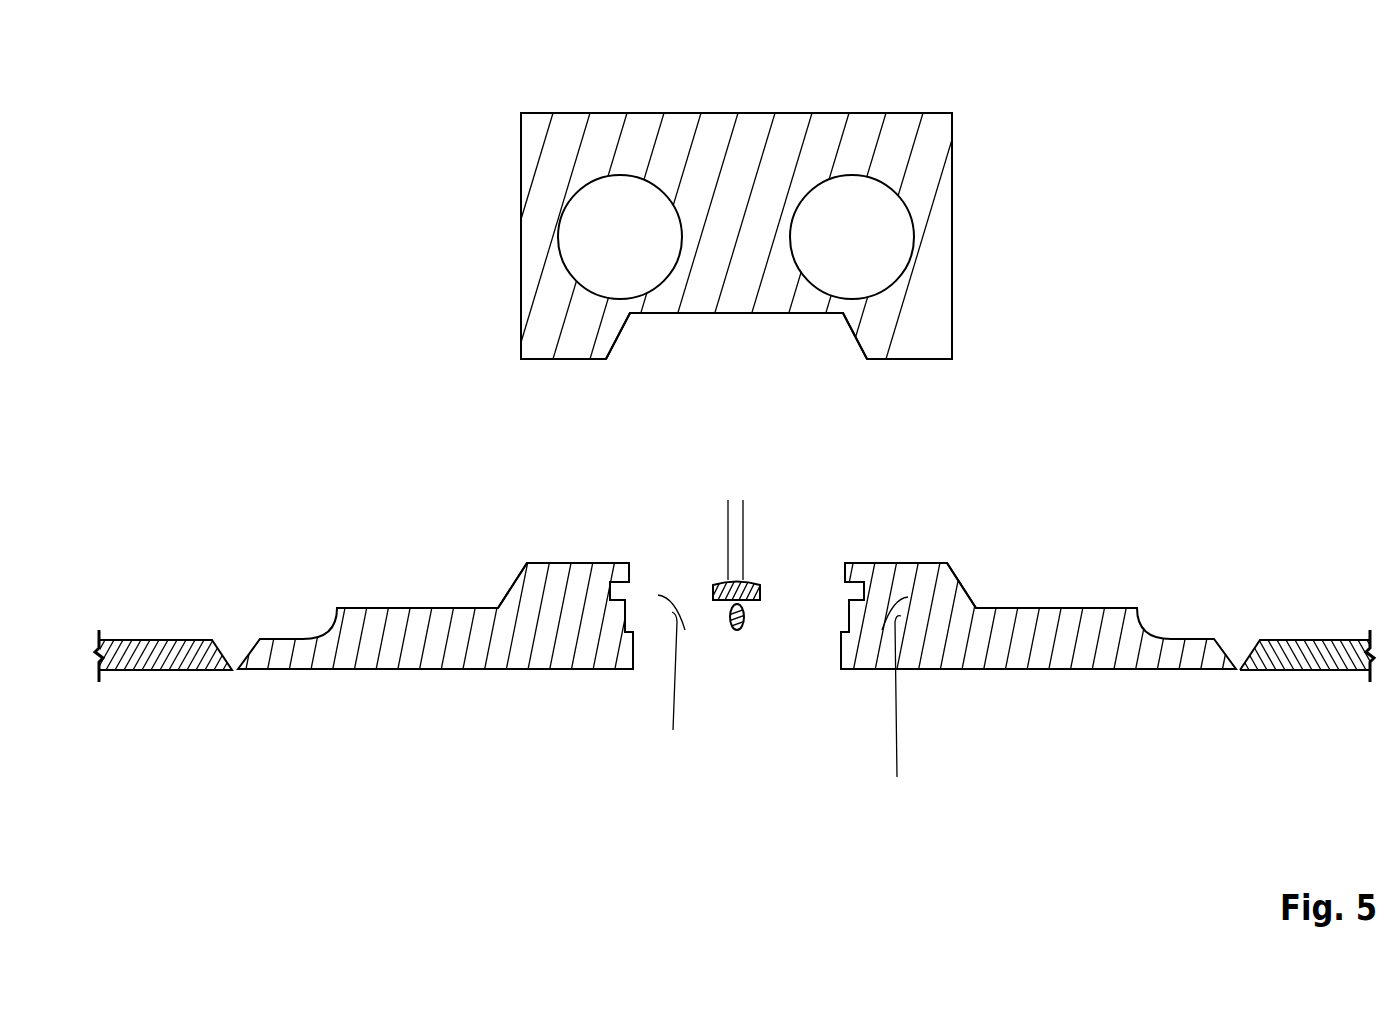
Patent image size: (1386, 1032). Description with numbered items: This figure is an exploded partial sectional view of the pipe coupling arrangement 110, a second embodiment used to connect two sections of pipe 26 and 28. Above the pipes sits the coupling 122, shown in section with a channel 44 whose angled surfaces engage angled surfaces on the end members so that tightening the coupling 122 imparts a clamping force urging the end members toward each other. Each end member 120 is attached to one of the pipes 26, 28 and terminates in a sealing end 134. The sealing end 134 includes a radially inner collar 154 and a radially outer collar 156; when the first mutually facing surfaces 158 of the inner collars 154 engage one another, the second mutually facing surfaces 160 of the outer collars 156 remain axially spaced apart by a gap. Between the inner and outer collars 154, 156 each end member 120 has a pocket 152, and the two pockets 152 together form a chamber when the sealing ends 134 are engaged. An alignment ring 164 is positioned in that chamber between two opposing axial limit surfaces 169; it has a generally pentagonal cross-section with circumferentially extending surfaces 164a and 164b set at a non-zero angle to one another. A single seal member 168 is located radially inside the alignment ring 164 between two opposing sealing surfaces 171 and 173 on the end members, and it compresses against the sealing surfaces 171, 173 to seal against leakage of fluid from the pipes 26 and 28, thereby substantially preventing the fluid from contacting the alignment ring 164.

The pipe coupling arrangement 110 is at (1207, 77).
The coupling 122 is at (945, 197).
The channel 44 is at (744, 313).
The pipe 26 is at (152, 655).
The pipe 28 is at (1307, 657).
The end member 120 is at (300, 657).
The sealing end 134 is at (559, 653).
The inner collar 154 is at (598, 652).
The outer collar 156 is at (567, 575).
The second mutually facing surface 160 is at (633, 568).
The pocket 152 is at (630, 591).
The first mutually facing surface 158 is at (633, 652).
The alignment ring 164 is at (737, 580).
The circumferentially extending surface 164a is at (728, 580).
The circumferentially extending surface 164b is at (743, 580).
The seal member 168 is at (737, 631).
The axial limit surface 169 is at (845, 620).
The sealing surface 171 is at (677, 694).
The sealing surface 173 is at (902, 720).